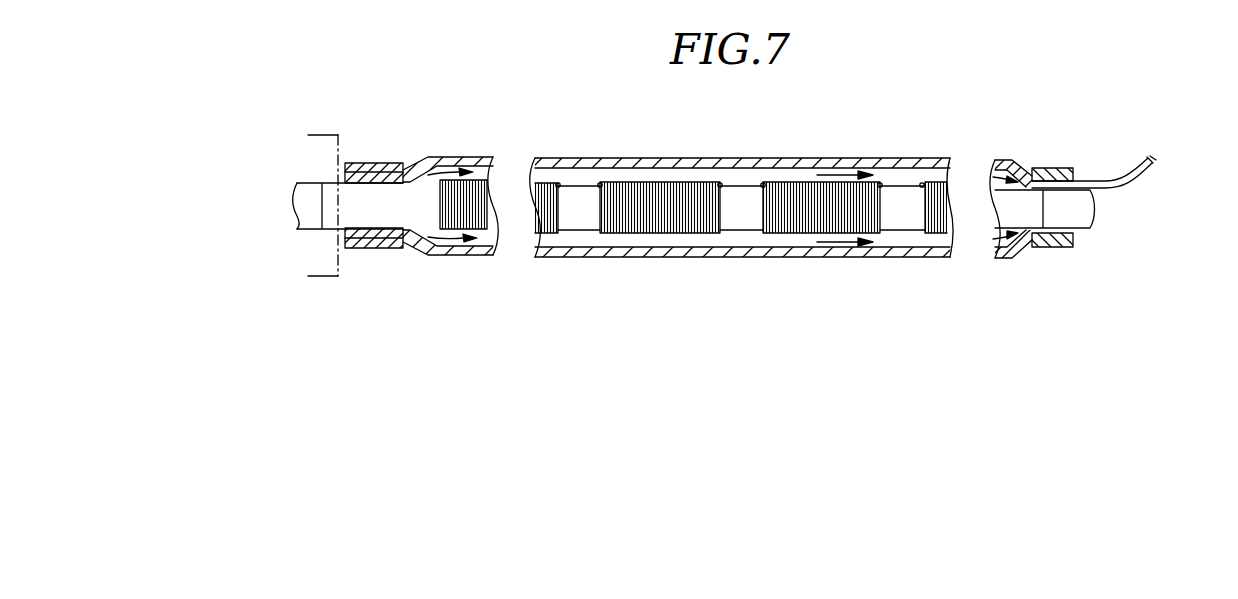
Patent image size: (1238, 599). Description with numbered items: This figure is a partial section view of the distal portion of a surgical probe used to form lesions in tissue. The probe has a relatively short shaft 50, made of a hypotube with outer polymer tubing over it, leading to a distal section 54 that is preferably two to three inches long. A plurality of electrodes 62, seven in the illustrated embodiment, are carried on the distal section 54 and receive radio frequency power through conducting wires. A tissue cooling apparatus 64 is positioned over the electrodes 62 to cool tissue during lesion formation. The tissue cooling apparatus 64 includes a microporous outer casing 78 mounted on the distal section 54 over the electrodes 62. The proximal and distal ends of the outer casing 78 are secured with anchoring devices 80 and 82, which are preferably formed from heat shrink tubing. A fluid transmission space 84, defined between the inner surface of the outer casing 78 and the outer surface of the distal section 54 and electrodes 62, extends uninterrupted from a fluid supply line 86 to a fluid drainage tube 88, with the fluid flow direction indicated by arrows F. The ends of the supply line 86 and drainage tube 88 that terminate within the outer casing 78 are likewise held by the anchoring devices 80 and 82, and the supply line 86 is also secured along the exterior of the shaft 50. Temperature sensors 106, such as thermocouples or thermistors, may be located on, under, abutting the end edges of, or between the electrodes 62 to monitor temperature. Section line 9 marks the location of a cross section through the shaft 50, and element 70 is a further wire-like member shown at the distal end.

The section line 9- 9 is at (308, 135).
The shaft 50 is at (312, 183).
The fluid supply line 86 is at (378, 181).
The anchoring device 80 is at (378, 243).
The arrows F is at (428, 180).
The microporous outer casing 78 is at (618, 157).
The fluid transmission space 84 is at (576, 237).
The distal section 54 is at (746, 220).
The electrodes 62 is at (667, 220).
The tissue cooling apparatus 64 is at (790, 134).
The temperature sensors 106 is at (922, 182).
The anchoring device 82 is at (1056, 168).
The fluid drainage tube 88 is at (1140, 180).
The wire end 70 is at (1097, 227).